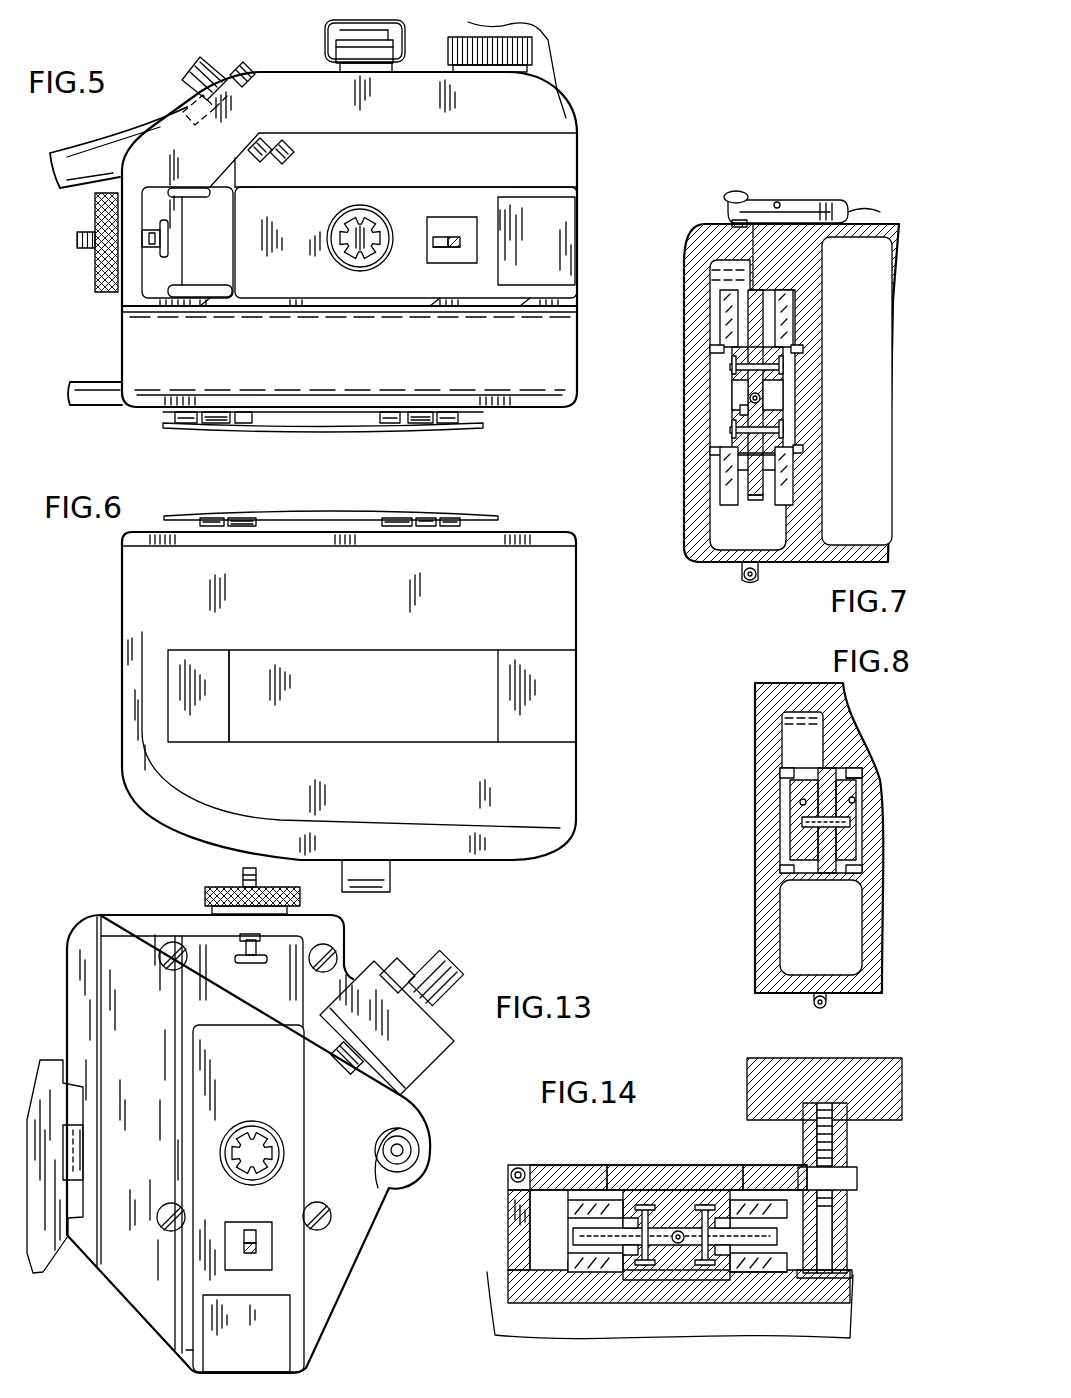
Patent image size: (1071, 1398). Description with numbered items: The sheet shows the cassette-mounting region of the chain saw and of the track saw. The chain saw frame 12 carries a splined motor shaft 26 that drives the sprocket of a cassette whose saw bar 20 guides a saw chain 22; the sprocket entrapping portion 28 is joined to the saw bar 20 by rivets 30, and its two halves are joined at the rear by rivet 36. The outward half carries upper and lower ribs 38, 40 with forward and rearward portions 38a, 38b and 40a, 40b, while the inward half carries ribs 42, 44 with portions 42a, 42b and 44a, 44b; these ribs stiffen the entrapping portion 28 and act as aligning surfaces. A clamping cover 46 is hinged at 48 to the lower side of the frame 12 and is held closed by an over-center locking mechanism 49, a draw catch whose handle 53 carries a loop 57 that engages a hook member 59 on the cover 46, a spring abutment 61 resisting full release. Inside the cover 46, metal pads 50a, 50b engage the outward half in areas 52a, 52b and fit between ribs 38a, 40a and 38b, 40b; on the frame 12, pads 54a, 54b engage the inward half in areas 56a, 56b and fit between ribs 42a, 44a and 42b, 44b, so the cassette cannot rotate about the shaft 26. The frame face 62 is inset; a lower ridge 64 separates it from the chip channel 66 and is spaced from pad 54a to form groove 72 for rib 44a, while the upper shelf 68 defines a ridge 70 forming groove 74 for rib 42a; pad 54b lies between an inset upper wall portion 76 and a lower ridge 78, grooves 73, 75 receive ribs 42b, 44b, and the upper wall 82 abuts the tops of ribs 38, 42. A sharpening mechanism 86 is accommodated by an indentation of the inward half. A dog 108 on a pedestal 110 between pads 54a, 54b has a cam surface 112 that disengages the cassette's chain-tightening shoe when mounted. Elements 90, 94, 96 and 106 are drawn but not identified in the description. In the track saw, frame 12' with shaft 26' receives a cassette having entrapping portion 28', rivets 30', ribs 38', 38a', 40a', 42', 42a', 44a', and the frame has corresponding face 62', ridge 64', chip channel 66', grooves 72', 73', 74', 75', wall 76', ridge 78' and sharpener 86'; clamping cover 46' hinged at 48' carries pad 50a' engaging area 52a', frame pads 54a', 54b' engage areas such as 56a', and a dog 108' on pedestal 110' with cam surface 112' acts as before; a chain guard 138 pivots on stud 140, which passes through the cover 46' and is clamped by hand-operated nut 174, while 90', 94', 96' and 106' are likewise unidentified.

In FIG. 5, the chain saw frame 12 is at (375, 239).
In FIG. 7, the saw bar 20 is at (740, 470).
In FIG. 7, the saw chain 22 is at (765, 505).
In FIG. 5, the motor shaft 26 is at (336, 235).
In FIG. 7, the sprocket entrapping portion 28 is at (691, 392).
In FIG. 8, the sprocket entrapping portion 28 is at (765, 820).
In FIG. 7, the rivets 30 is at (716, 399).
In FIG. 8, the rivet 36 is at (850, 823).
In FIG. 7, the upper edge rib 38 is at (693, 318).
In FIG. 7, the forward rib portion 38a is at (681, 340).
In FIG. 8, the rearward rib portion 38b is at (785, 770).
In FIG. 7, the lower edge rib 40 is at (713, 495).
In FIG. 7, the forward rib portion 40a is at (685, 455).
In FIG. 8, the rearward rib portion 40b is at (790, 870).
In FIG. 7, the upper edge rib 42 is at (821, 318).
In FIG. 7, the forward rib portion 42a is at (833, 340).
In FIG. 8, the rearward rib portion 42b is at (858, 765).
In FIG. 7, the lower edge rib 44 is at (800, 490).
In FIG. 7, the forward rib portion 44a is at (833, 450).
In FIG. 8, the rearward rib portion 44b is at (862, 870).
In FIG. 6, the clamping cover 46 is at (384, 696).
In FIG. 7, the clamping cover 46 is at (790, 378).
In FIG. 8, the clamping cover 46 is at (789, 838).
In FIG. 5, the cover hinge 48 is at (323, 437).
In FIG. 6, the cover hinge 48 is at (331, 501).
In FIG. 7, the cover hinge 48 is at (754, 598).
In FIG. 8, the cover hinge 48 is at (790, 1003).
In FIG. 5, the over-center locking mechanism 49 is at (323, 37).
In FIG. 7, the over-center locking mechanism 49 is at (818, 180).
In FIG. 6, the cover pad 50a is at (441, 696).
In FIG. 7, the cover pad 50a is at (680, 417).
In FIG. 6, the cover pad 50b is at (175, 700).
In FIG. 8, the cover pad 50b is at (805, 820).
In FIG. 7, the engagement area 52a is at (693, 397).
In FIG. 8, the engagement area 52b is at (800, 795).
In FIG. 5, the latch handle 53 is at (383, 40).
In FIG. 7, the latch handle 53 is at (840, 200).
In FIG. 5, the frame pad 54a is at (605, 236).
In FIG. 7, the frame pad 54a is at (802, 400).
In FIG. 5, the frame pad 54b is at (219, 242).
In FIG. 8, the frame pad 54b is at (885, 820).
In FIG. 7, the engagement area 56a is at (818, 389).
In FIG. 8, the engagement area 56b is at (860, 773).
In FIG. 5, the loop 57 is at (328, 24).
In FIG. 7, the loop 57 is at (790, 200).
In FIG. 6, the hook member 59 is at (392, 878).
In FIG. 7, the hook member 59 is at (732, 195).
In FIG. 5, the spring abutment 61 is at (372, 66).
In FIG. 5, the frame face 62 is at (406, 242).
In FIG. 5, the lower ridge 64 is at (371, 332).
In FIG. 7, the lower ridge 64 is at (800, 470).
In FIG. 5, the chip channel 66 is at (350, 352).
In FIG. 7, the chip channel 66 is at (721, 405).
In FIG. 5, the upper shelf 68 is at (433, 156).
In FIG. 5, the lower longitudinal ridge 70 is at (375, 187).
In FIG. 5, the groove 72 is at (527, 250).
In FIG. 5, the longitudinal groove 73 is at (221, 203).
In FIG. 5, the groove 74 is at (536, 215).
In FIG. 5, the longitudinal groove 75 is at (214, 288).
In FIG. 5, the inset upper wall portion 76 is at (198, 238).
In FIG. 8, the inset upper wall portion 76 is at (802, 742).
In FIG. 5, the lower upstanding ridge 78 is at (349, 327).
In FIG. 8, the lower upstanding ridge 78 is at (821, 927).
In FIG. 5, the longitudinal upper wall 82 is at (387, 134).
In FIG. 5, the sharpening mechanism 86 is at (182, 81).
In FIG. 5, the knob shaft 90 is at (65, 229).
In FIG. 5, the button 94 is at (182, 246).
In FIG. 5, the knurled knob 96 is at (75, 243).
In FIG. 7, the axle 106 is at (810, 412).
In FIG. 5, the dog 108 is at (452, 227).
In FIG. 5, the pedestal 110 is at (419, 219).
In FIG. 5, the cam surface 112 is at (452, 270).
In FIG. 13, the chain guard 138 is at (395, 1185).
In FIG. 14, the chain guard 138 is at (847, 1223).
In FIG. 13, the stud 140 is at (405, 1140).
In FIG. 14, the stud 140 is at (857, 1175).
In FIG. 14, the hand-operated nut 174 is at (747, 1085).
In FIG. 13, the track saw frame 12' is at (248, 1144).
In FIG. 13, the motor shaft 26' is at (252, 1132).
In FIG. 14, the sprocket entrapping portion 28' is at (572, 1173).
In FIG. 14, the rivets 30' is at (665, 1268).
In FIG. 14, the upper edge rib 38' is at (758, 1173).
In FIG. 14, the forward rib portion 38a' is at (731, 1192).
In FIG. 14, the forward rib portion 40a' is at (606, 1172).
In FIG. 14, the upper edge rib 42' is at (771, 1305).
In FIG. 14, the forward rib portion 42a' is at (758, 1300).
In FIG. 14, the forward rib portion 44a' is at (591, 1276).
In FIG. 13, the clamping cover 46' is at (55, 1138).
In FIG. 14, the clamping cover 46' is at (670, 1222).
In FIG. 13, the cover hinge 48' is at (108, 1155).
In FIG. 14, the cover hinge 48' is at (502, 1160).
In FIG. 14, the cover pad 50a' is at (675, 1188).
In FIG. 14, the engagement area 52a' is at (690, 1178).
In FIG. 13, the frame pad 54a' is at (304, 1346).
In FIG. 14, the frame pad 54a' is at (676, 1260).
In FIG. 13, the frame pad 54b' is at (217, 1144).
In FIG. 14, the engagement area 56a' is at (680, 1289).
In FIG. 13, the frame face 62' is at (248, 1198).
In FIG. 13, the lower ridge 64' is at (162, 1313).
In FIG. 13, the chip channel 66' is at (122, 1098).
In FIG. 13, the groove 72' is at (229, 1330).
In FIG. 13, the longitudinal groove 73' is at (266, 953).
In FIG. 13, the groove 74' is at (247, 1333).
In FIG. 13, the longitudinal groove 75' is at (219, 983).
In FIG. 13, the inset upper wall portion 76' is at (284, 1005).
In FIG. 13, the lower upstanding ridge 78' is at (202, 981).
In FIG. 13, the sharpening mechanism 86' is at (417, 1006).
In FIG. 13, the knob shaft 90' is at (212, 872).
In FIG. 13, the button 94' is at (251, 973).
In FIG. 13, the knurled knob 96' is at (213, 896).
In FIG. 14, the axle 106' is at (703, 1194).
In FIG. 13, the dog 108' is at (290, 1249).
In FIG. 13, the pedestal 110' is at (224, 1217).
In FIG. 13, the cam surface 112' is at (299, 1243).